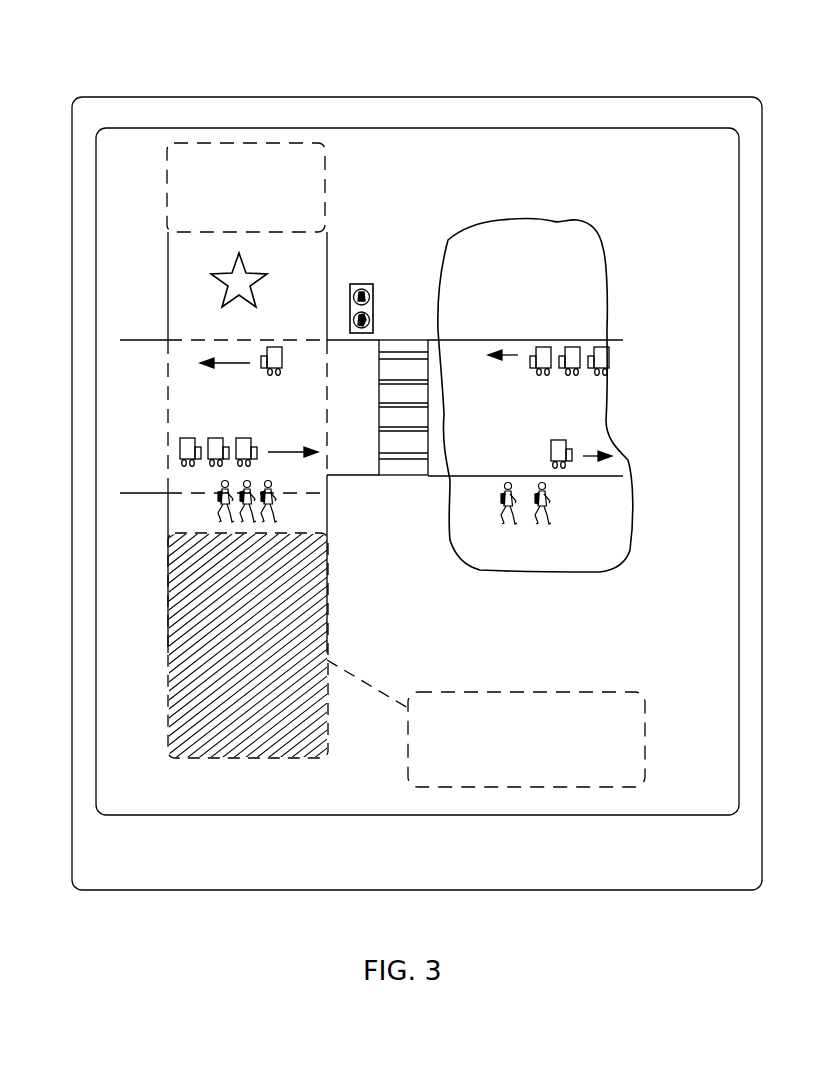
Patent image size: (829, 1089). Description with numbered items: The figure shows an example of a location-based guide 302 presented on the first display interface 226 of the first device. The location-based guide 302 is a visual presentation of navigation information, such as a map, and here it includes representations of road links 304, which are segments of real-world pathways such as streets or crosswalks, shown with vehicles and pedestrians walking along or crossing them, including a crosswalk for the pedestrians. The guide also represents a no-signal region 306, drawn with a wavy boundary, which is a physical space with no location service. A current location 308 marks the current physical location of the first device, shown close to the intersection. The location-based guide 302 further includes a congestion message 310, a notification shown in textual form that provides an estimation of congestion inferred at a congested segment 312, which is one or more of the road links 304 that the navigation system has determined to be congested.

The first display interface 226 is at (162, 80).
The location-based guide 302 is at (643, 128).
The road links 304 is at (323, 185).
The no-signal region 306 is at (467, 230).
The current location 308 is at (240, 250).
The congestion message 310 is at (603, 787).
The congested segment 312 is at (241, 758).